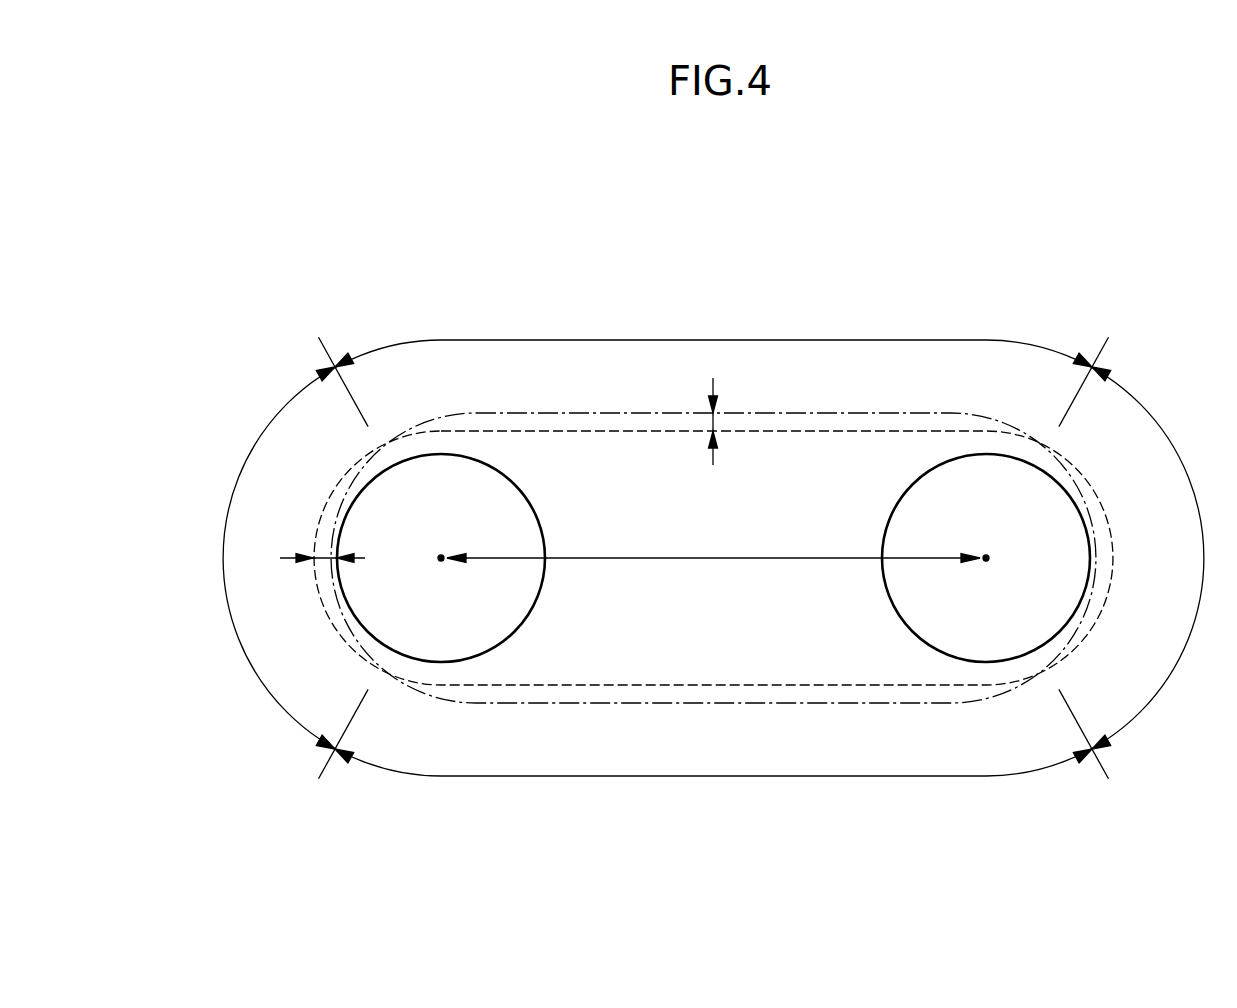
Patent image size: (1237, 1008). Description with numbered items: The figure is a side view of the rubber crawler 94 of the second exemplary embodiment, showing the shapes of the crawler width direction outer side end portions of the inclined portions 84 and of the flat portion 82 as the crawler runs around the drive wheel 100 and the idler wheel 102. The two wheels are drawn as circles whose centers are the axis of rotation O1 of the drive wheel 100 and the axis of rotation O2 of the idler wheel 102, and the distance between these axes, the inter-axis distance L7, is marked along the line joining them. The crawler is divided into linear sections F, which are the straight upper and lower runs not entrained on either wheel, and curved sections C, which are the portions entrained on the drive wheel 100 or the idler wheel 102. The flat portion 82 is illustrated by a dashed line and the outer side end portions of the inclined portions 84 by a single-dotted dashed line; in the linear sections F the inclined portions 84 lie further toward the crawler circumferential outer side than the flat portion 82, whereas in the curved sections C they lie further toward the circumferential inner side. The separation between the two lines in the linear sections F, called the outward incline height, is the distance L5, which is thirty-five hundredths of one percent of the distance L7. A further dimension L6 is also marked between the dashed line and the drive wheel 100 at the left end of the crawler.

The rubber crawler 94 is at (227, 381).
The flat portion 82 is at (872, 430).
The inclined portions 84 is at (947, 412).
The drive wheel 100 is at (530, 502).
The idler wheel 102 is at (897, 502).
The axis of rotation of the drive wheel O1 is at (441, 565).
The axis of rotation of the idler wheel O2 is at (986, 565).
The distance (outward incline height) L5 is at (716, 421).
The distance between hole and boundary line L6 is at (318, 575).
The distance (inter-axis distance) L7 is at (713, 545).
The linear sections F is at (690, 340).
The curved sections C is at (712, 558).